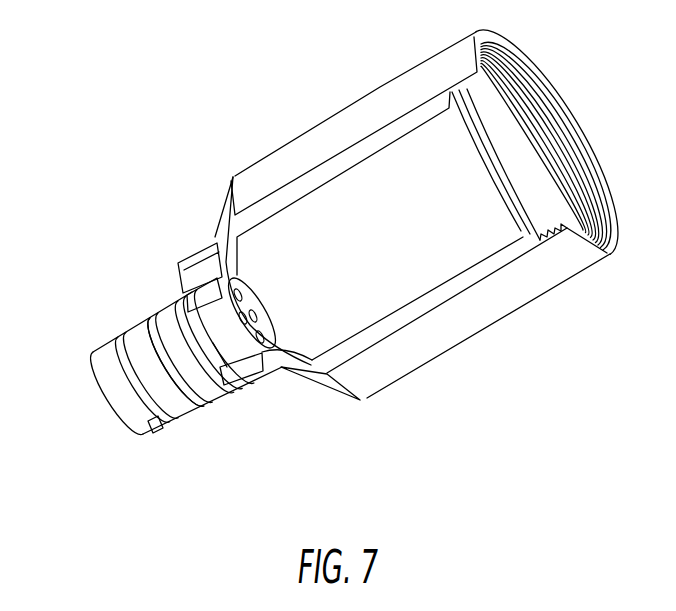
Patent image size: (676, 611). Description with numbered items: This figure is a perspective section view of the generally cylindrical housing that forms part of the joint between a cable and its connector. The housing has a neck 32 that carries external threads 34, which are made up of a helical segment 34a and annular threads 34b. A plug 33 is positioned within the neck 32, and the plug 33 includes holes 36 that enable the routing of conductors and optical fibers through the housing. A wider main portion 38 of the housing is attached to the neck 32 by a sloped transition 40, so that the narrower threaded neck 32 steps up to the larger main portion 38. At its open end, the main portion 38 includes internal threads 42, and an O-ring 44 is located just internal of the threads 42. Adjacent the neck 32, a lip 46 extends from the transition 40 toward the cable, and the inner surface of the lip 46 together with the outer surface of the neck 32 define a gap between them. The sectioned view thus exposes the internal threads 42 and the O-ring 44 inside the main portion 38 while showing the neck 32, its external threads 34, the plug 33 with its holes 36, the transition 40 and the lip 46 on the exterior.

The neck 32 is at (136, 464).
The plug 33 is at (225, 388).
The external threads 34 is at (112, 322).
The helical segment 34a is at (146, 426).
The annular threads 34b is at (150, 313).
The holes 36 is at (258, 337).
The main portion 38 is at (452, 335).
The sloped transition 40 is at (320, 390).
The internal threads 42 is at (578, 181).
The O-ring 44 is at (502, 183).
The lip 46 is at (263, 394).